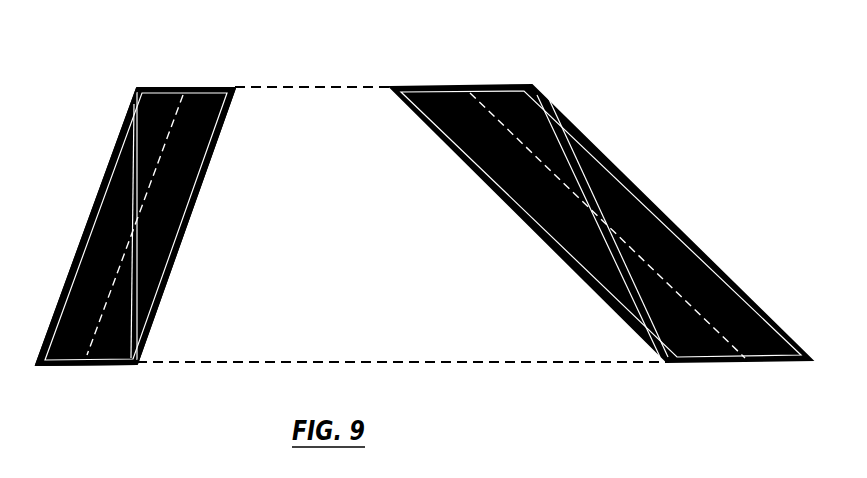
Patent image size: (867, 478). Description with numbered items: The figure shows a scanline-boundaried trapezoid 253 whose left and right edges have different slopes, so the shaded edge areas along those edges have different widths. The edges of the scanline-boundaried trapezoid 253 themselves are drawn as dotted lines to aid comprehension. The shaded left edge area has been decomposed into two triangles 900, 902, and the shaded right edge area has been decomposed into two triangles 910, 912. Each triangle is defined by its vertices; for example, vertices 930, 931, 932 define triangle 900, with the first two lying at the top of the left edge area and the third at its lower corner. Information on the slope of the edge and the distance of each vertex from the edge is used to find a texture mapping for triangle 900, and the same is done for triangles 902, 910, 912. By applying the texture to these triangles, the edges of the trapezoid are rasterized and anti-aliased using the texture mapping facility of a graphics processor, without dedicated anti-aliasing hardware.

The scanline-boundaried trapezoid 253 is at (375, 292).
The triangle 900 is at (200, 138).
The triangle 902 is at (117, 341).
The triangle 910 is at (513, 142).
The triangle 912 is at (727, 322).
The vertex 930 is at (141, 87).
The vertex 931 is at (237, 87).
The vertex 932 is at (137, 366).